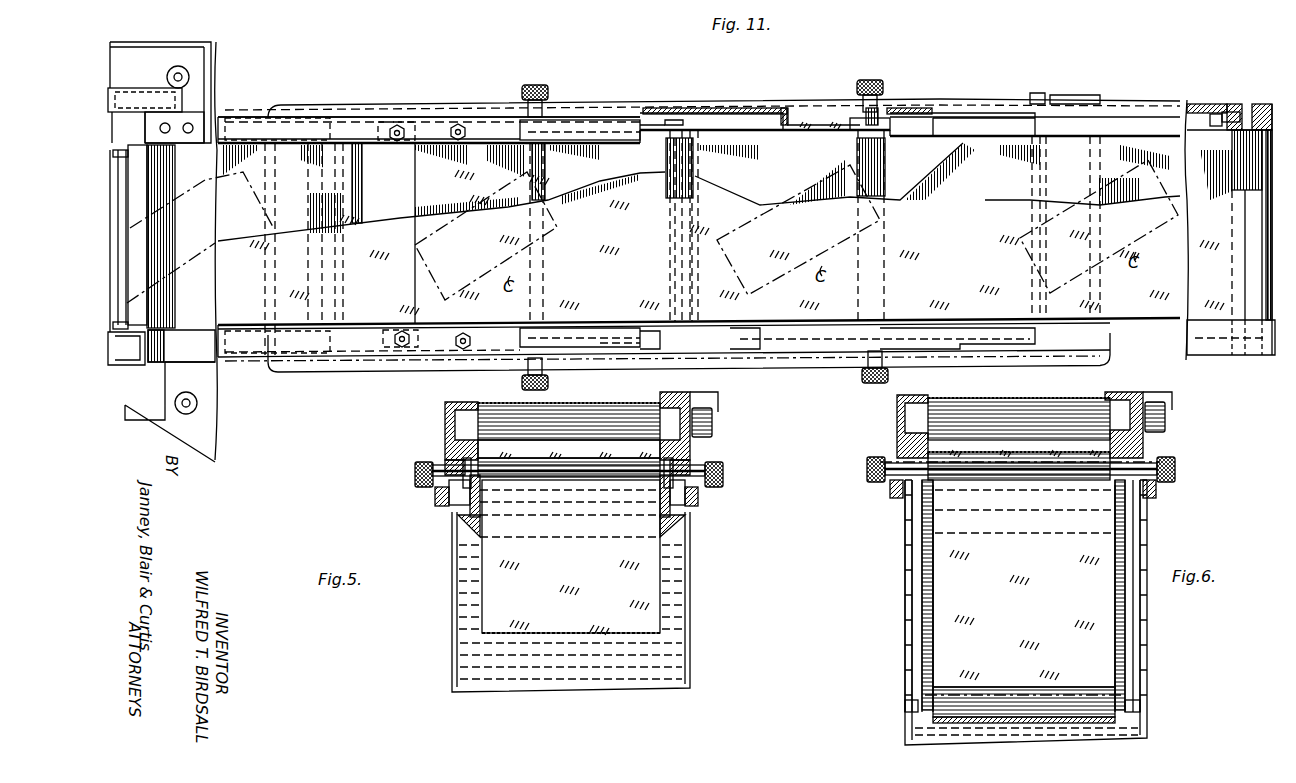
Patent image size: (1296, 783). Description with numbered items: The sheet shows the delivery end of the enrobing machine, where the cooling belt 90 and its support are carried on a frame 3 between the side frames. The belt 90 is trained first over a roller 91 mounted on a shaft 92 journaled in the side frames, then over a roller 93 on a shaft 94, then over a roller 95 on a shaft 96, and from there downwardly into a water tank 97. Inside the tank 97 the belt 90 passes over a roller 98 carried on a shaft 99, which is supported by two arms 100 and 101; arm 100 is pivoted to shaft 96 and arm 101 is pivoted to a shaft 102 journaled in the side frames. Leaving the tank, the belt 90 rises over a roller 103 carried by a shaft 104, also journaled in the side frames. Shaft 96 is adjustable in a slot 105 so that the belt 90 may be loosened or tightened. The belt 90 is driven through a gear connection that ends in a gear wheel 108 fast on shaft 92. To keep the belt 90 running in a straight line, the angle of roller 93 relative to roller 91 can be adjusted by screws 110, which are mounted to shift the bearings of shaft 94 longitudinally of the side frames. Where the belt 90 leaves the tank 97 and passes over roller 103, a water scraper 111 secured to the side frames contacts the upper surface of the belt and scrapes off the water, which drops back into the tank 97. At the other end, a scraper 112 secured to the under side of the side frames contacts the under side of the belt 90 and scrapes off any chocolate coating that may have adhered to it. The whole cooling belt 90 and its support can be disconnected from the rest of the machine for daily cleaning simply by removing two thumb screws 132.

In FIG. 11, the frame 3 is at (203, 436).
In FIG. 11, the belt 90 is at (150, 260).
In FIG. 5, the belt 90 is at (650, 408).
In FIG. 6, the belt 90 is at (988, 402).
In FIG. 11, the roller 91 is at (168, 172).
In FIG. 5, the roller 91 is at (512, 408).
In FIG. 6, the roller 91 is at (1064, 402).
In FIG. 11, the shaft 92 is at (170, 331).
In FIG. 5, the shaft 92 is at (672, 400).
In FIG. 6, the shaft 92 is at (1125, 398).
In FIG. 11, the roller 93 is at (1234, 148).
In FIG. 11, the shaft 94 is at (1249, 112).
In FIG. 11, the roller 95 is at (857, 146).
In FIG. 6, the roller 95 is at (1052, 478).
In FIG. 11, the shaft 96 is at (865, 116).
In FIG. 5, the water tank 97 is at (690, 569).
In FIG. 6, the water tank 97 is at (1148, 620).
In FIG. 11, the roller 98 is at (695, 163).
In FIG. 11, the shaft 99 is at (690, 276).
In FIG. 11, the arm 100 is at (733, 132).
In FIG. 6, the arm 100 is at (905, 518).
In FIG. 11, the arm 101 is at (645, 130).
In FIG. 5, the arm 101 is at (462, 510).
In FIG. 11, the shaft 102 is at (544, 150).
In FIG. 5, the shaft 102 is at (555, 477).
In FIG. 11, the roller 103 is at (346, 320).
In FIG. 11, the shaft 104 is at (317, 357).
In FIG. 11, the slot 105 is at (793, 108).
In FIG. 11, the gear wheel 108 is at (182, 100).
In FIG. 5, the gear wheel 108 is at (712, 432).
In FIG. 6, the gear wheel 108 is at (1165, 430).
In FIG. 11, the screws 110 is at (1216, 113).
In FIG. 11, the water scraper 111 is at (352, 140).
In FIG. 5, the water scraper 111 is at (580, 457).
In FIG. 11, the scraper 112 is at (1020, 242).
In FIG. 11, the thumb screws 132 is at (190, 77).